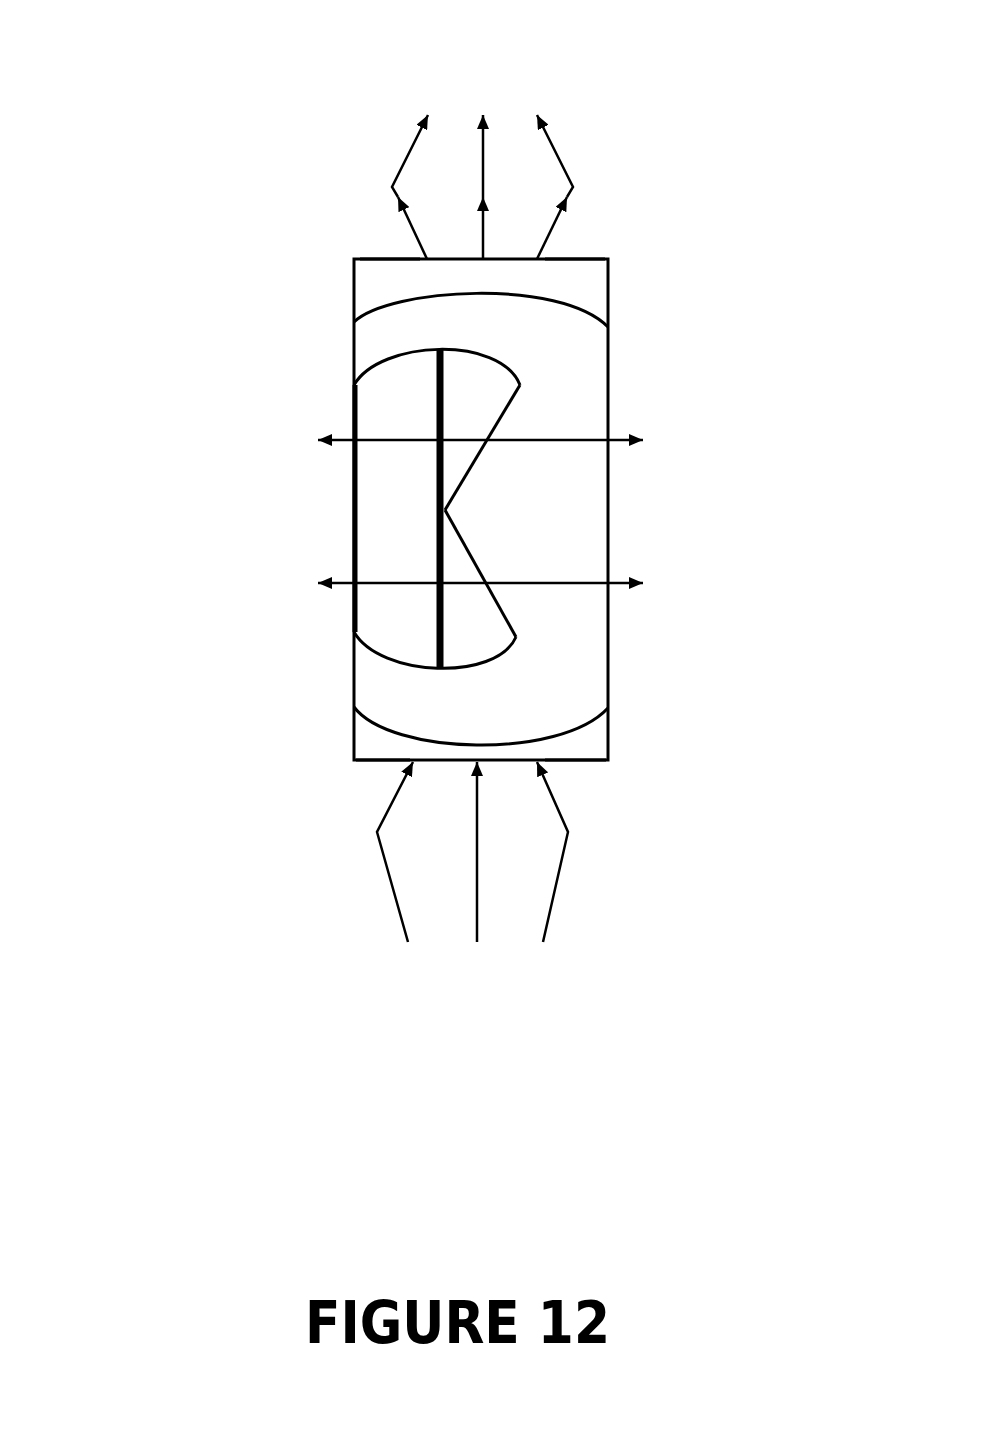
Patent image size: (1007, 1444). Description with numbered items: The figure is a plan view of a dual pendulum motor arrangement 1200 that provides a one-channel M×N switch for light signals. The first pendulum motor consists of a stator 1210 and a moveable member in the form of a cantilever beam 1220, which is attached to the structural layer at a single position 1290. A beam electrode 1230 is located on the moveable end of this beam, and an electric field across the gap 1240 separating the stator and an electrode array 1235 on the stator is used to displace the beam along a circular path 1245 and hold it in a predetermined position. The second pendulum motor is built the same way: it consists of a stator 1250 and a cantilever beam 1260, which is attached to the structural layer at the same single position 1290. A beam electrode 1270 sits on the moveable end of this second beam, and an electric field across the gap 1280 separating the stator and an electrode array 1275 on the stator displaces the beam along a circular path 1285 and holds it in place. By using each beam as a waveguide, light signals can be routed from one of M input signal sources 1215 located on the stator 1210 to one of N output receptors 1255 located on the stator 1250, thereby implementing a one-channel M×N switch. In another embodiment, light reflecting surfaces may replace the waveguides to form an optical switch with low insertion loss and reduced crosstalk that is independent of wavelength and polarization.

The dual pendulum motor arrangement 1200 is at (97, 26).
The stator 1210 is at (570, 762).
The input signal sources 1215 is at (543, 950).
The cantilever beam 1220 is at (445, 628).
The beam electrode 1230 is at (525, 693).
The electrode array 1235 is at (380, 762).
The gap 1240 is at (503, 747).
The circular path 1245 is at (513, 585).
The stator 1250 is at (573, 259).
The output receptors 1255 is at (550, 113).
The cantilever beam 1260 is at (482, 387).
The beam electrode 1270 is at (540, 352).
The electrode array 1275 is at (390, 259).
The gap 1280 is at (520, 297).
The circular path 1285 is at (511, 442).
The single position 1290 is at (445, 512).